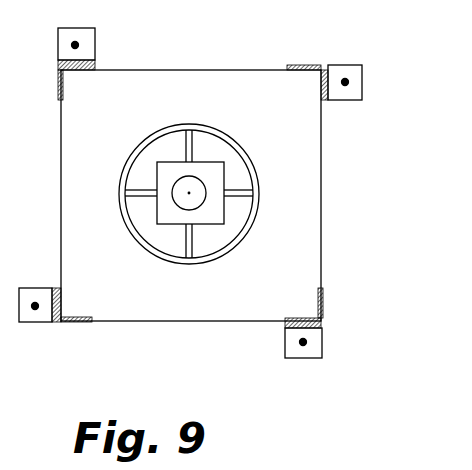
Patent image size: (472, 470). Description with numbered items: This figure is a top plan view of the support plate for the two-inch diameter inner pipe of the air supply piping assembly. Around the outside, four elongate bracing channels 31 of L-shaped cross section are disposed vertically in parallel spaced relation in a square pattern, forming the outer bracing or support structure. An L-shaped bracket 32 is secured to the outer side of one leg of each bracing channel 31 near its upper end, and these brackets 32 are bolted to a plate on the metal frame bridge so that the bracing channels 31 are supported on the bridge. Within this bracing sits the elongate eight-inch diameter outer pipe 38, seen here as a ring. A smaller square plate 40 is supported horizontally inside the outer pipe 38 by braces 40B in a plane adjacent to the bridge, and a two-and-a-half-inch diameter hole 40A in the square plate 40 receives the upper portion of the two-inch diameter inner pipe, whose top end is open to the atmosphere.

The bracing channel 31 is at (58, 86).
The L-shaped bracket 32 is at (95, 46).
The outer pipe 38 is at (162, 134).
The square plate 40 is at (228, 176).
The hole 40A is at (198, 187).
The braces 40B is at (240, 197).